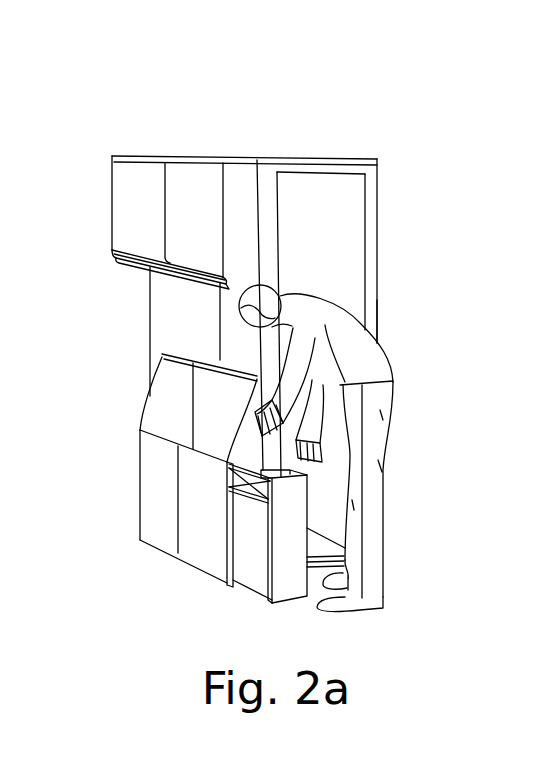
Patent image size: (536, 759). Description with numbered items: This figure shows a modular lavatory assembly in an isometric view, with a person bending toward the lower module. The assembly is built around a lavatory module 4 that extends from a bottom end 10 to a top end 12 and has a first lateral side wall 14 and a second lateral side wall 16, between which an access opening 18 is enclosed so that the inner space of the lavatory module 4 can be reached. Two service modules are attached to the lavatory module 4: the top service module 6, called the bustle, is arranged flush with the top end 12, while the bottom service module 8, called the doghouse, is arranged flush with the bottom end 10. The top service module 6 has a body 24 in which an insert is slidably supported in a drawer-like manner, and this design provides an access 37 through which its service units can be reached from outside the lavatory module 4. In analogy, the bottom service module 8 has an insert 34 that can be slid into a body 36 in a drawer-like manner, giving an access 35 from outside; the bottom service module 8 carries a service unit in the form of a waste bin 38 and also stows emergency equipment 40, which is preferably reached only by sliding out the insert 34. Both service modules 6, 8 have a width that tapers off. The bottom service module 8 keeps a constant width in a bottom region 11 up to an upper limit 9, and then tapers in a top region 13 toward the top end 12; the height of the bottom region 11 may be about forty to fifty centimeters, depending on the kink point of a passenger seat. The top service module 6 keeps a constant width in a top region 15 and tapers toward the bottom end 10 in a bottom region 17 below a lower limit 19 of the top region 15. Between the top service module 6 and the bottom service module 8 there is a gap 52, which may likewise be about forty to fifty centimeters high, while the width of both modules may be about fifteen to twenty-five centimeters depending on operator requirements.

The lavatory module 4 is at (367, 285).
The service module 6 is at (187, 137).
The service module 8 is at (131, 455).
The upper limit 9 is at (138, 477).
The bottom end 10 is at (328, 548).
The bottom region 11 is at (172, 490).
The top end 12 is at (270, 159).
The top region 13 is at (189, 397).
The first lateral side wall 14 is at (168, 338).
The top region 15 is at (159, 198).
The second lateral side wall 16 is at (387, 184).
The bottom region 17 is at (106, 250).
The access opening 18 is at (332, 187).
The lower limit 19 is at (108, 240).
The body 24 is at (112, 190).
The insert 34 is at (260, 565).
The access 35 is at (232, 587).
The body 36 is at (162, 425).
The access 37 is at (237, 158).
The waste bin 38 is at (253, 528).
The emergency equipment 40 is at (263, 472).
The gap 52 is at (214, 313).